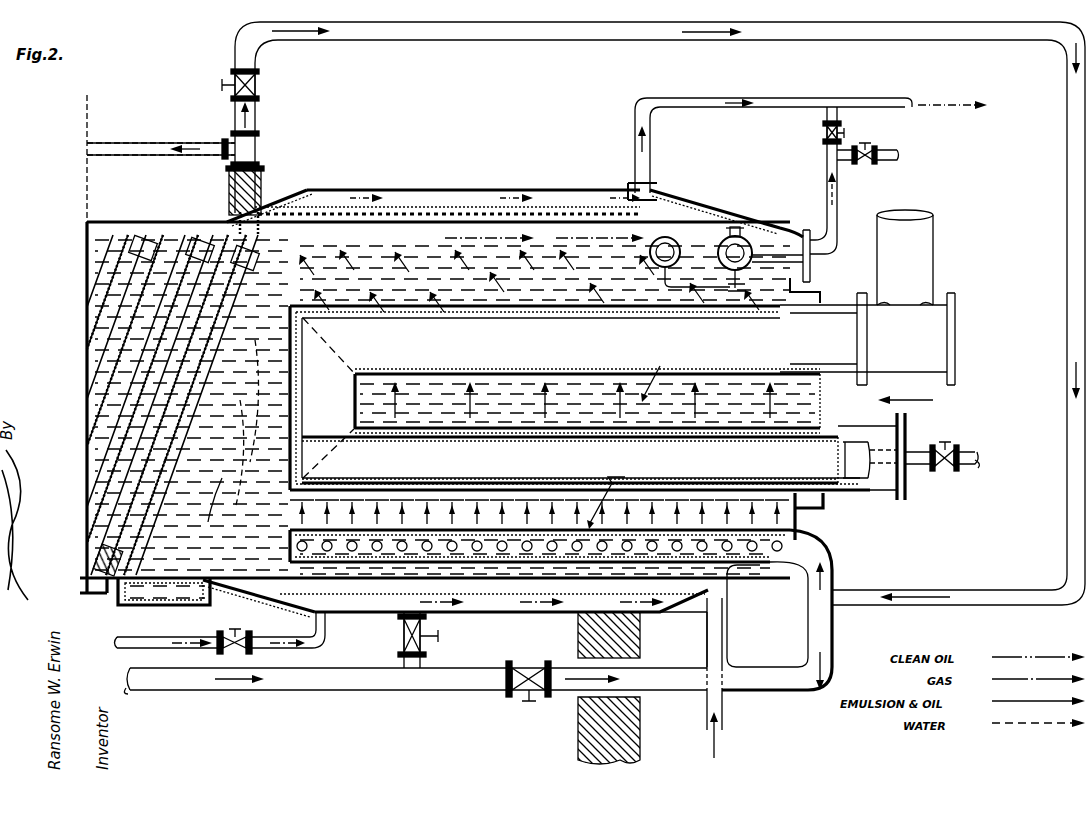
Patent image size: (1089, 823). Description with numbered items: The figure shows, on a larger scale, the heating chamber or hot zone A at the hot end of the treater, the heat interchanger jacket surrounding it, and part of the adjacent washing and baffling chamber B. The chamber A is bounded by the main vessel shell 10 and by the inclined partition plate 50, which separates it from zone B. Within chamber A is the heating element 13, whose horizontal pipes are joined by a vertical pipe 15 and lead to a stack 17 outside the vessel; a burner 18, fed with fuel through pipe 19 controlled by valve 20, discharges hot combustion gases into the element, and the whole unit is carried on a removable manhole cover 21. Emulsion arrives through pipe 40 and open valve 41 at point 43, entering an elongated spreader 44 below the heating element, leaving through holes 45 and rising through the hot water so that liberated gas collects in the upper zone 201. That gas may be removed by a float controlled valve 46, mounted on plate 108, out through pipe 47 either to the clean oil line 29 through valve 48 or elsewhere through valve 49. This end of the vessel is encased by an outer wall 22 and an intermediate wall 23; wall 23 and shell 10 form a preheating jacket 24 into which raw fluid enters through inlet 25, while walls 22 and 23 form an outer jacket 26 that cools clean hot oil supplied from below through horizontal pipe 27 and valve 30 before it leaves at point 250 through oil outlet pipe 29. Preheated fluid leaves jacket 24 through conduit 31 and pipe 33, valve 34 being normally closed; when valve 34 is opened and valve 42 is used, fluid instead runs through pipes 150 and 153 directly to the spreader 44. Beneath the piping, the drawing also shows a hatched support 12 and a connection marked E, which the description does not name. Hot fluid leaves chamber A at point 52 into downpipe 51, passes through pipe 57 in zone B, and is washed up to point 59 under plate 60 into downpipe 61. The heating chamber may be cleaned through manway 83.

The pipe 150 is at (560, 22).
The pipe 153 is at (980, 593).
The valve 34 is at (258, 92).
The pipe 33 is at (132, 147).
The conduit 31 is at (259, 182).
The upper zone 201 is at (321, 230).
The outer jacket 26 is at (412, 197).
The outer wall 22 is at (361, 192).
The wall of the treater 10 is at (590, 204).
The point 250 is at (656, 193).
The oil outlet pipe 29 is at (866, 100).
The pipe 47 is at (838, 242).
The valve 48 is at (822, 136).
The valve 49 is at (869, 146).
The preheating jacket 24 is at (717, 211).
The plate 108 is at (812, 262).
The float controlled valve 46 is at (753, 238).
The intermediate wall 23 is at (517, 223).
The heating chamber A is at (482, 270).
The vertical pipe 15 is at (580, 398).
The manhole cover 21 is at (823, 400).
The heating element 13 is at (867, 352).
The stack 17 is at (921, 249).
The burner 18 is at (835, 458).
The valve 20 is at (955, 448).
The pipe 19 is at (976, 458).
The point 43 is at (812, 536).
The holes 45 is at (346, 613).
The horizontal pipe 27 is at (130, 637).
The valve 30 is at (240, 631).
The manway 83 is at (178, 603).
The pipe 40 is at (322, 689).
The valve 41 is at (538, 702).
The valve 42 is at (402, 650).
The concrete base 12 is at (633, 740).
The spreader 44 is at (650, 628).
The inlet 25 is at (724, 703).
The emulsion inlet E is at (728, 640).
The point 59 is at (167, 247).
The washing and baffling chamber B is at (173, 233).
The plate 60 is at (57, 332).
The downpipe 61 is at (54, 367).
The downpipe 51 is at (123, 389).
The pipe 57 is at (138, 405).
The point 52 is at (260, 253).
The inclined partition plate 50 is at (173, 427).